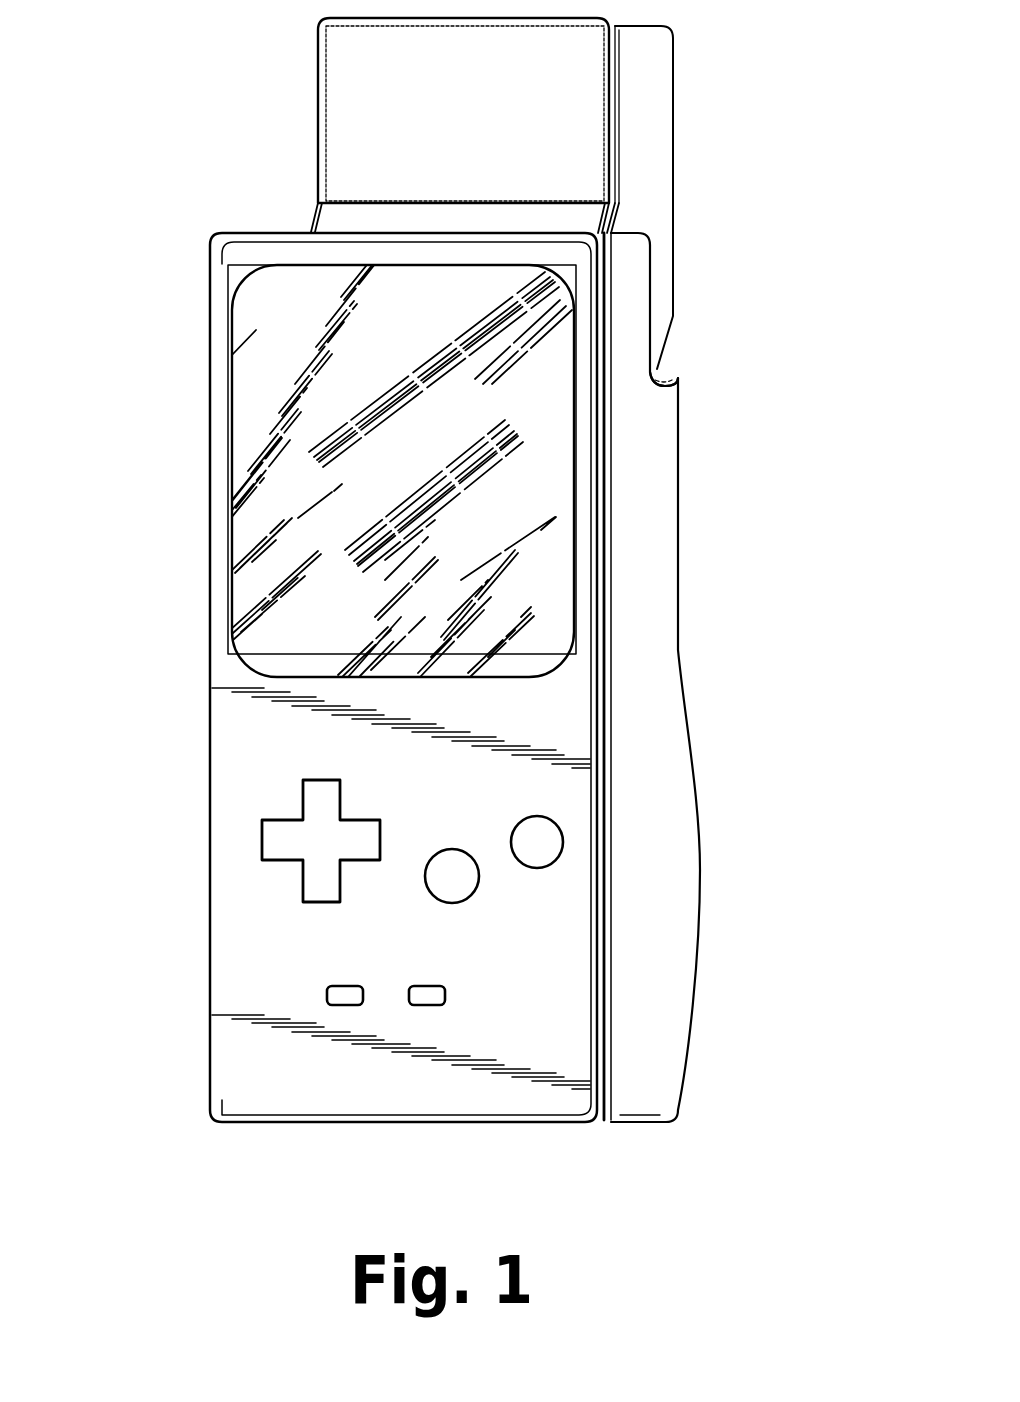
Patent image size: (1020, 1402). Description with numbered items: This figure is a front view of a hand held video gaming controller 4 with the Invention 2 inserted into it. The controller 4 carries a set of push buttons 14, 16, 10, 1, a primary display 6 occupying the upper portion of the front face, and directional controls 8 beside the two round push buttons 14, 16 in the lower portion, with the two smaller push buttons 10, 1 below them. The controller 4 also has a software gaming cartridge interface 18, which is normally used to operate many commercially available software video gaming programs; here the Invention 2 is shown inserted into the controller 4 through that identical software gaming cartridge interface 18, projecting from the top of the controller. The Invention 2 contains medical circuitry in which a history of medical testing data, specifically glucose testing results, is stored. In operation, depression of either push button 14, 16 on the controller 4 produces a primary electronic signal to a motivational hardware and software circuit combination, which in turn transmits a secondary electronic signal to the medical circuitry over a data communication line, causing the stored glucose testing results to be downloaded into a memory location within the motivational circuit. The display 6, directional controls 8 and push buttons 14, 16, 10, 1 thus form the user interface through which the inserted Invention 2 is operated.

The push button 1 is at (427, 1000).
The Invention 2 is at (318, 95).
The hand held video gaming controller 4 is at (220, 250).
The primary display 6 is at (258, 427).
The directional controls 8 is at (280, 838).
The push button 10 is at (340, 1000).
The push button 14 is at (462, 878).
The push button 16 is at (545, 843).
The software gaming cartridge interface 18 is at (656, 372).